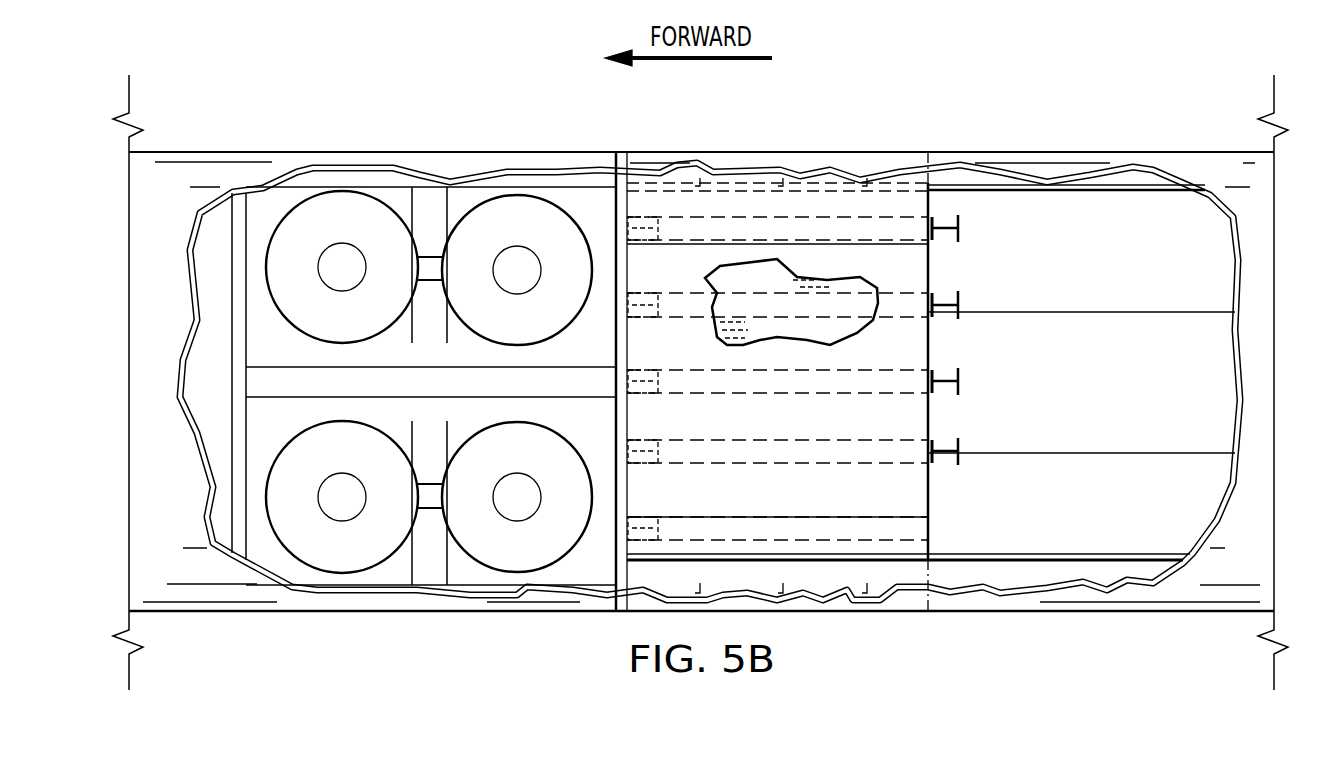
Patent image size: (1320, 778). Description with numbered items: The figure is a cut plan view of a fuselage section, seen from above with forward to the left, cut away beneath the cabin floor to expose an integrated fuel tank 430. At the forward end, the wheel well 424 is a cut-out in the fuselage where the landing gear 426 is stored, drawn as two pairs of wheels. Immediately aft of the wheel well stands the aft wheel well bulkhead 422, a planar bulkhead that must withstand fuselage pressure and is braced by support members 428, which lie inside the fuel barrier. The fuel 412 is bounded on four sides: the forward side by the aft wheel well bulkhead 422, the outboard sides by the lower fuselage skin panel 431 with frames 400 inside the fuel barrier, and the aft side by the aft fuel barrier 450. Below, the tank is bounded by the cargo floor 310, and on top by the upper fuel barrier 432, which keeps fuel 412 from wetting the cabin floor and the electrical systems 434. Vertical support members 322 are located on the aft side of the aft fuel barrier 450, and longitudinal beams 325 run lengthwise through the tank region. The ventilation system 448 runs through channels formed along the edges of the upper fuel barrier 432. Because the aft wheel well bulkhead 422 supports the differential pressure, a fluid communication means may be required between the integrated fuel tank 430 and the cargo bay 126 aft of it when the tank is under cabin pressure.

The cargo bay 126 is at (1093, 522).
The cargo floor 310 is at (1081, 355).
The vertical support members 322 is at (958, 306).
The longitudinal beams 325 is at (912, 466).
The frames 400 is at (848, 168).
The fuel 412 is at (791, 302).
The aft wheel well bulkhead 422 is at (616, 188).
The wheel well 424 is at (474, 578).
The landing gear 426 is at (312, 199).
The support members 428 is at (641, 216).
The integrated fuel tank 430 is at (777, 366).
The lower fuselage skin panel 431 is at (757, 152).
The upper fuel barrier 432 is at (912, 247).
The electrical systems 434 is at (938, 184).
The ventilation system 448 is at (1046, 570).
The aft fuel barrier 450 is at (932, 198).